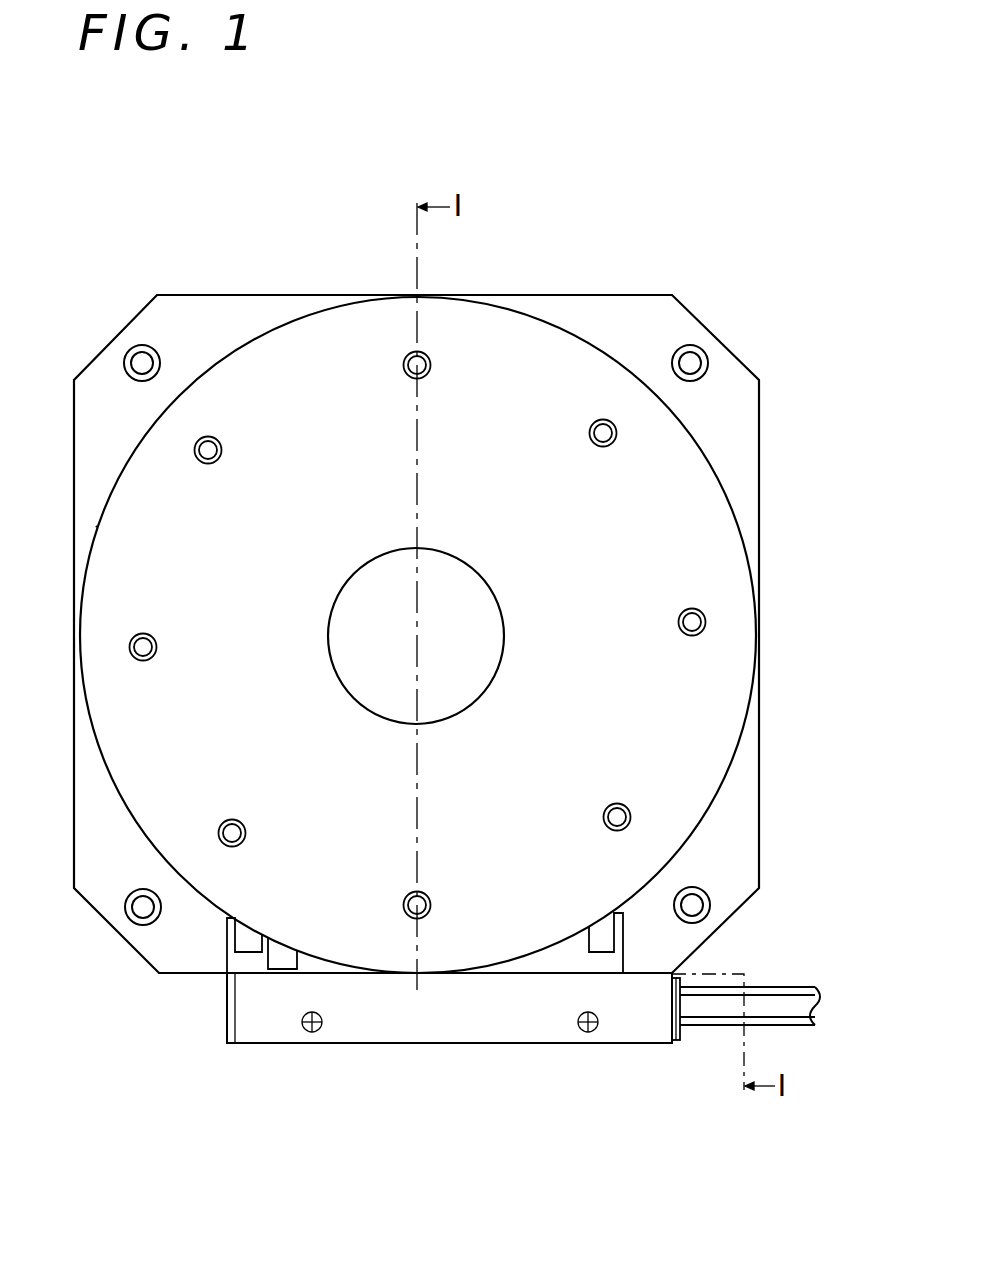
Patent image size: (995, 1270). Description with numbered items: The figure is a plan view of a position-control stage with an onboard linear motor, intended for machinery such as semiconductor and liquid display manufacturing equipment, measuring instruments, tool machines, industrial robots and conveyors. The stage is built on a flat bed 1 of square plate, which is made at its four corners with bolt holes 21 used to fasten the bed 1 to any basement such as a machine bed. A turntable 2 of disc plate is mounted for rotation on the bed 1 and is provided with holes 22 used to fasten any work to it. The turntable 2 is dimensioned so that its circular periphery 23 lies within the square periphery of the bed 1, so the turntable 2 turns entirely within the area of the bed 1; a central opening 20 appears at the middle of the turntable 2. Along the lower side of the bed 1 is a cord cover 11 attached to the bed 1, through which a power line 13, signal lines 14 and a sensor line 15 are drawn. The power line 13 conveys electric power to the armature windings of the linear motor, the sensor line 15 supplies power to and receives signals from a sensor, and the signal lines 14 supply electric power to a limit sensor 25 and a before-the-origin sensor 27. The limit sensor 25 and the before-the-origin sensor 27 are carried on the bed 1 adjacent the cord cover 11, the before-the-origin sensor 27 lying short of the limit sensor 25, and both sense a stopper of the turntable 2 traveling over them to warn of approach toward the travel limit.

The bed 1 is at (722, 405).
The turntable 2 is at (685, 522).
The cord cover 11 is at (490, 1022).
The power line 13 is at (718, 1075).
The signal lines 14 is at (718, 1075).
The sensor line 15 is at (724, 1010).
The center hole 20 is at (472, 667).
The bolt holes 21 is at (140, 360).
The holes 22 is at (207, 450).
The circular periphery 23 is at (97, 527).
The limit sensor 25 is at (283, 960).
The before-the-origin sensor 27 is at (250, 948).